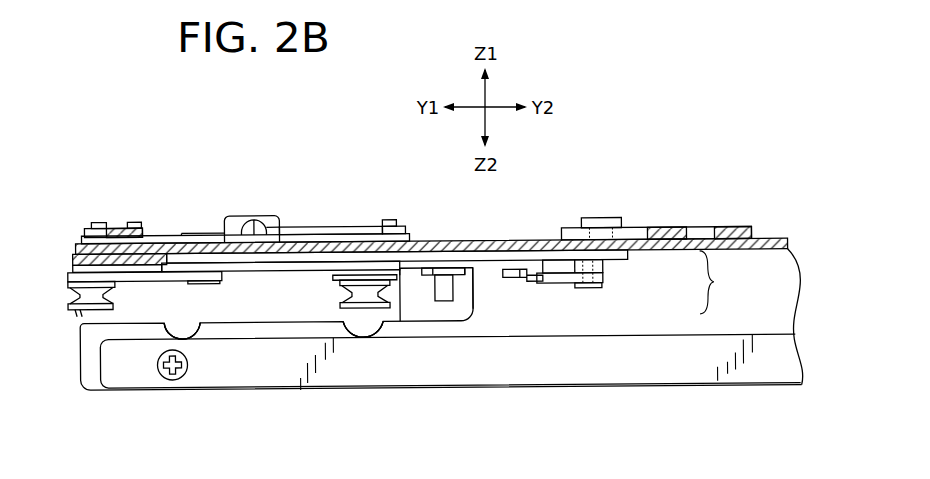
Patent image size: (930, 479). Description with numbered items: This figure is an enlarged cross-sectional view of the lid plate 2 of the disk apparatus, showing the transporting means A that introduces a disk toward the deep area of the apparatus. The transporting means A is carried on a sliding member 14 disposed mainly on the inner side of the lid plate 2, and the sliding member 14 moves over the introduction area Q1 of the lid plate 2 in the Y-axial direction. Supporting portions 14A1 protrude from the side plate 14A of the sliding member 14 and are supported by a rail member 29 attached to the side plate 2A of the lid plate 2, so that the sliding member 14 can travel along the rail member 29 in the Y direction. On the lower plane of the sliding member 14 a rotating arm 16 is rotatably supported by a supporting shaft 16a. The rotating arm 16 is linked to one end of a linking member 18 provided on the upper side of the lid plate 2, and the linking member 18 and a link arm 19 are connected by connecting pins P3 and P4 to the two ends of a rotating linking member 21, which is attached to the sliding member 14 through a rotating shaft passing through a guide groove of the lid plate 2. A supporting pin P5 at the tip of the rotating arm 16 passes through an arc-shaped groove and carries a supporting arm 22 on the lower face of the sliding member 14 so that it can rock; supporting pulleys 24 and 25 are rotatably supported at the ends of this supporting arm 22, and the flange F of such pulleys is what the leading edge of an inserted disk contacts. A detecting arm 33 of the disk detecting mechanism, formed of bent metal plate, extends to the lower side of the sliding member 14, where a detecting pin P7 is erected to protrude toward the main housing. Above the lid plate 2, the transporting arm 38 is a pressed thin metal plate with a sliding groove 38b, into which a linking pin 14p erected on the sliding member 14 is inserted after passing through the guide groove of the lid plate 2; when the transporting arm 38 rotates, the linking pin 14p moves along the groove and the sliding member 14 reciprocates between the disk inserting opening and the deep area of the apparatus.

The lid plate 2 is at (522, 241).
The side plate 2A is at (89, 380).
The sliding member 14 is at (621, 262).
The side plate 14A is at (466, 309).
The supporting portions 14A1 is at (188, 338).
The linking pin 14p is at (594, 219).
The rotating arm 16 is at (556, 284).
The supporting shaft 16a is at (589, 289).
The linking member 18 is at (328, 226).
The linking arm 19 is at (121, 226).
The rotating linking member 21 is at (160, 234).
The supporting arm 22 is at (256, 279).
The supporting pulley 24 is at (72, 310).
The supporting pulley 25 is at (340, 295).
The rail member 29 is at (548, 378).
The detecting arm 33 is at (448, 268).
The transporting arm 38 is at (633, 229).
The sliding groove 38b is at (699, 229).
The transporting means A is at (293, 209).
The flange F is at (118, 292).
The connecting pin P3 is at (386, 220).
The connecting pin P4 is at (103, 220).
The supporting pin P5 is at (206, 323).
The detecting pin P7 is at (438, 322).
The introduction area Q1 is at (724, 282).